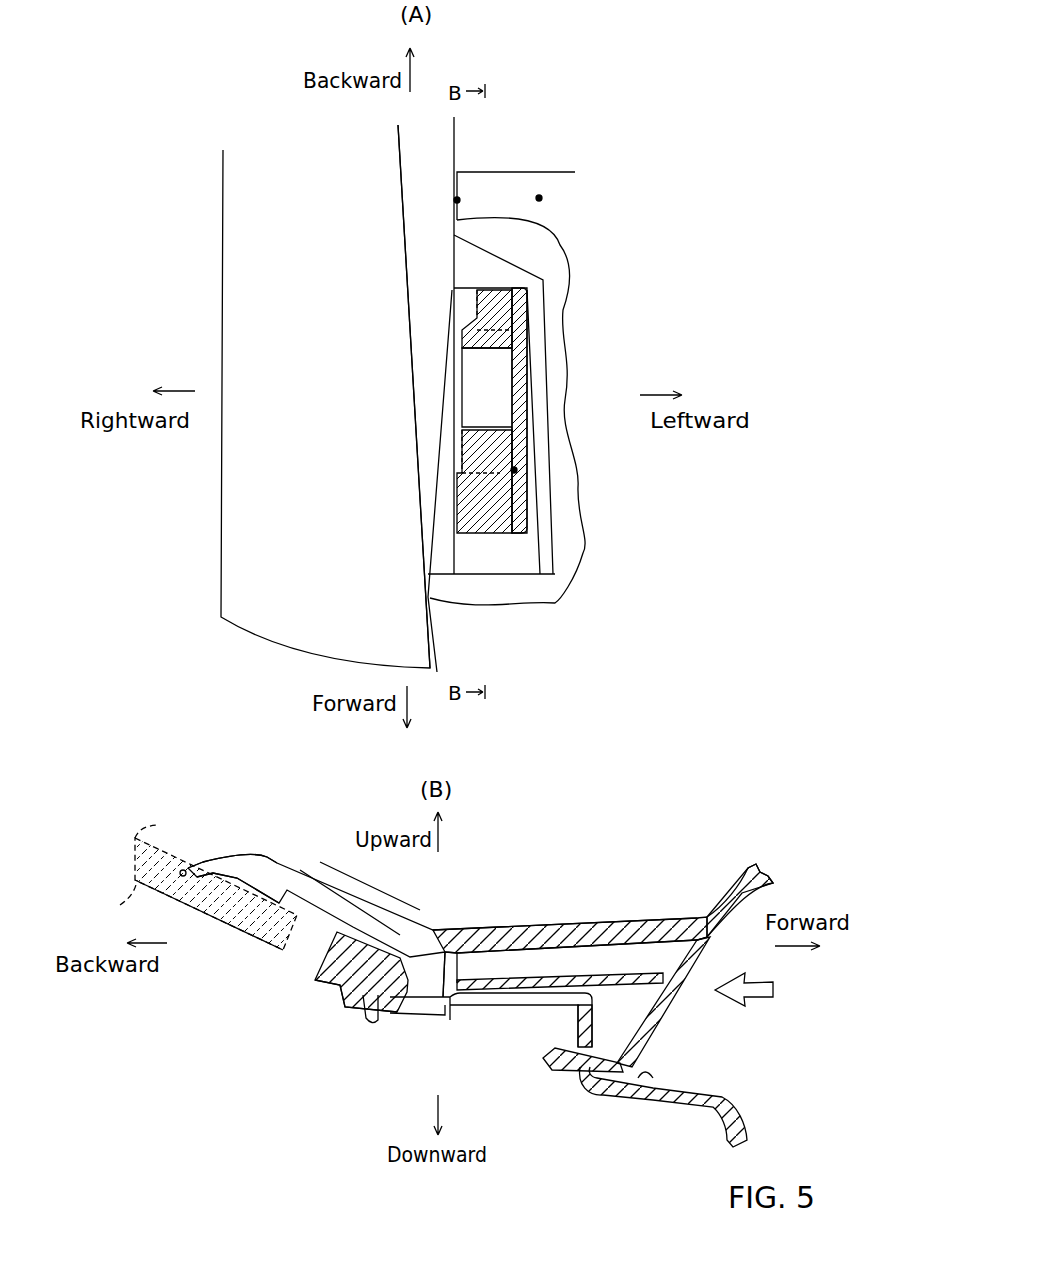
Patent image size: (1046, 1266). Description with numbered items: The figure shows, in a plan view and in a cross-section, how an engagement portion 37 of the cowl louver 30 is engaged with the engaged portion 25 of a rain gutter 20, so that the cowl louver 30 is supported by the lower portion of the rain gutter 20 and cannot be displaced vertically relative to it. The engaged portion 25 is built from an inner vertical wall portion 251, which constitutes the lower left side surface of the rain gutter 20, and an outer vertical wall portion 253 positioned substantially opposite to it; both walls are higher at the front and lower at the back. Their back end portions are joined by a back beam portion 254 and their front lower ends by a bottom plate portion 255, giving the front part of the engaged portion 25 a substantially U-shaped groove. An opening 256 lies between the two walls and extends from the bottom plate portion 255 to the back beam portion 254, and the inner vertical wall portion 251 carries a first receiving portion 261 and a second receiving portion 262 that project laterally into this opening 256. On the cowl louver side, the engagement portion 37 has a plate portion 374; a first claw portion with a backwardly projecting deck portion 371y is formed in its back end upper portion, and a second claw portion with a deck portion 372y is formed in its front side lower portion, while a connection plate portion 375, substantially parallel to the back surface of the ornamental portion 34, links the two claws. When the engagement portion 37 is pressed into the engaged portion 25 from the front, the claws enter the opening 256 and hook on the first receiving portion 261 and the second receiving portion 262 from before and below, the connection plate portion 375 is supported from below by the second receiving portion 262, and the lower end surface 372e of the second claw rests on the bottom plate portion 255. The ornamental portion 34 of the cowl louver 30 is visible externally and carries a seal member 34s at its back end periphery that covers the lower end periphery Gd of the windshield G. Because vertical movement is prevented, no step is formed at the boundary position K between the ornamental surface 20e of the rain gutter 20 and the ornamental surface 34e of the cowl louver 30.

The rain gutter 20 is at (210, 220).
The ornamental surface of the rain gutter 20e is at (427, 253).
The engaged portion 25 is at (564, 287).
The inner vertical wall portion 251 is at (440, 498).
The outer vertical wall portion 253 is at (535, 378).
The back beam portion 254 is at (322, 980).
The bottom plate portion 255 is at (487, 563).
The opening 256 is at (477, 1000).
The first receiving portion 261 is at (493, 300).
The second receiving portion 262 is at (480, 450).
The cowl louver 30 is at (611, 579).
The ornamental portion 34 is at (586, 191).
The ornamental surface 34e is at (539, 198).
The seal member 34s is at (225, 867).
The engagement portion 37 is at (516, 551).
The deck portion of the first claw portion 371y is at (497, 345).
The deck portion of the second claw portion 372y is at (495, 525).
The lower end surface of the second claw portion 372e is at (602, 1093).
The plate portion 374 is at (514, 470).
The connection plate portion 375 is at (623, 973).
The boundary position K is at (457, 200).
The windshield G is at (182, 870).
The lower end periphery of the windshield Gd is at (260, 920).